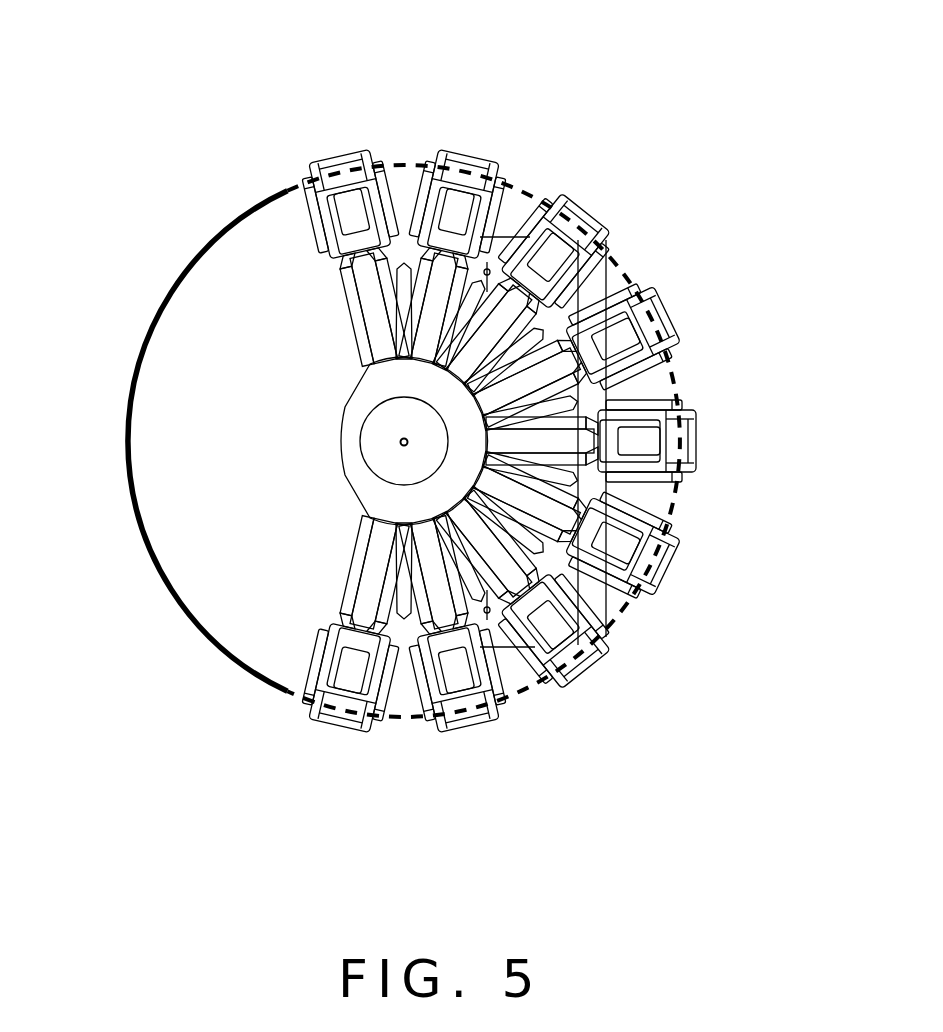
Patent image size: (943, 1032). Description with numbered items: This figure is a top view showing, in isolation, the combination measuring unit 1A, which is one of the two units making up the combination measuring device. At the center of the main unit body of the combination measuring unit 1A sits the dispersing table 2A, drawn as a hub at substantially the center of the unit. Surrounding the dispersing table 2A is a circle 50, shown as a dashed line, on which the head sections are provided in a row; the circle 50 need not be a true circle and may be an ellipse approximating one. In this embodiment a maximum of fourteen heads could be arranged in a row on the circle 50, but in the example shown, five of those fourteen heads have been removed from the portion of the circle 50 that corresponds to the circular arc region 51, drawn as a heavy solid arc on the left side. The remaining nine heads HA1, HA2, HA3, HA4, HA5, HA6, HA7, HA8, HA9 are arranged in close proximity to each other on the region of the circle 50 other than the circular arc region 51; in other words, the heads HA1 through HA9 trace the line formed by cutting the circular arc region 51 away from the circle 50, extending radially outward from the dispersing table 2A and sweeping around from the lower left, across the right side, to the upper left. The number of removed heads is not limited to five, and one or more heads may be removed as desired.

The combination measuring unit 1A is at (626, 109).
The dispersing table 2A is at (387, 455).
The circle 50 is at (628, 272).
The circular arc region 51 is at (137, 358).
The head HA1 is at (362, 644).
The head HA2 is at (449, 642).
The head HA3 is at (538, 596).
The head HA4 is at (604, 522).
The head HA5 is at (630, 441).
The head HA6 is at (602, 359).
The head HA7 is at (540, 290).
The head HA8 is at (447, 243).
The head HA9 is at (362, 243).